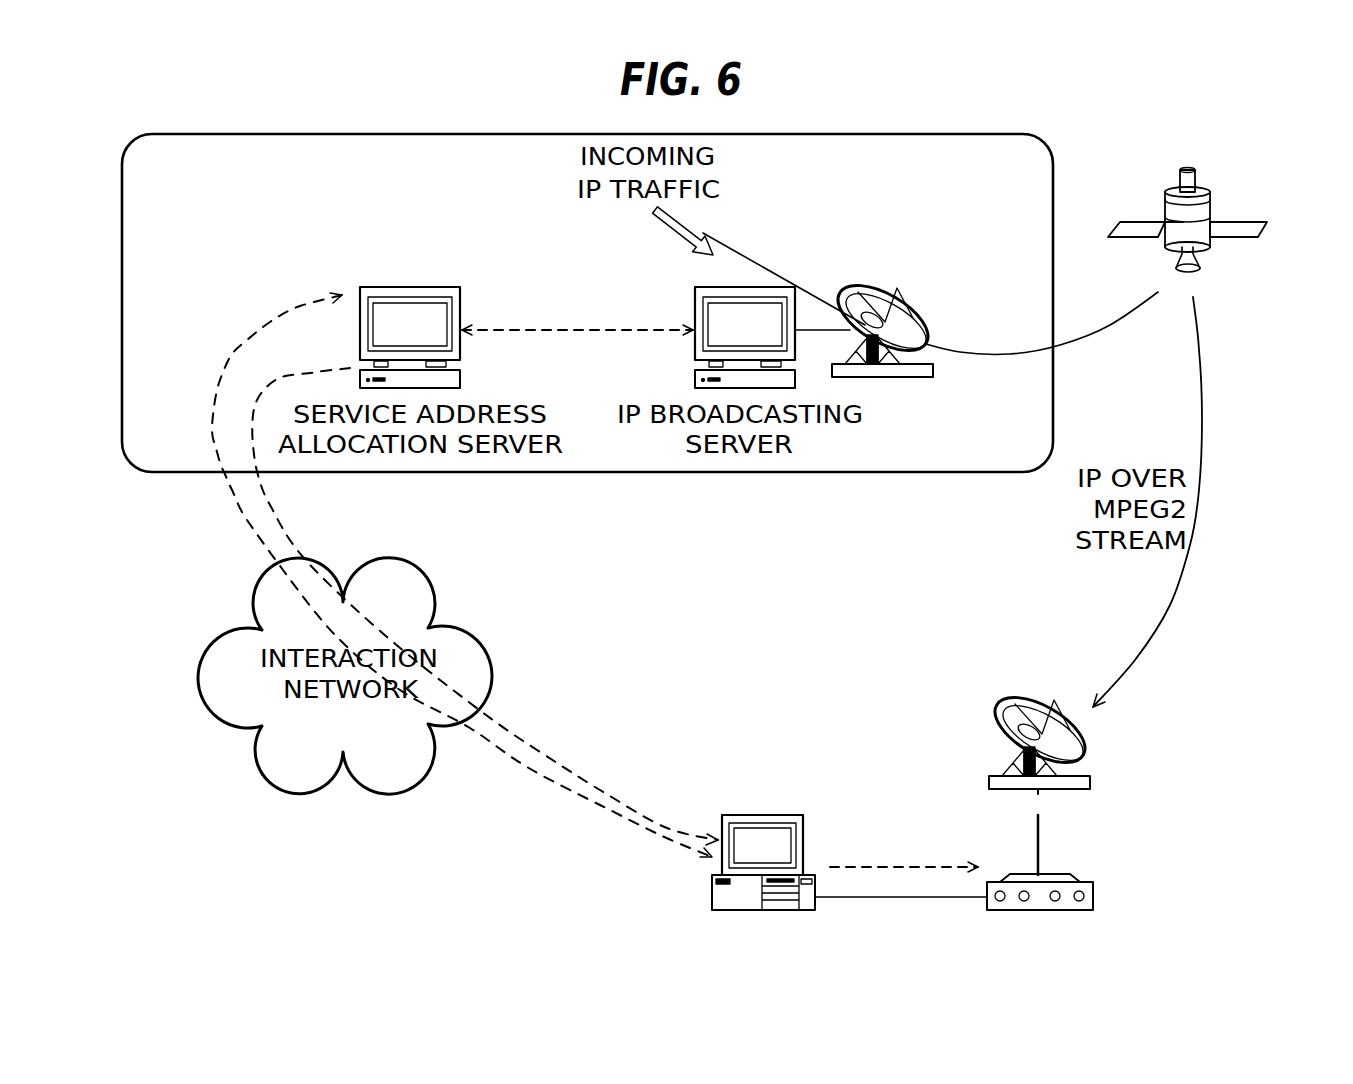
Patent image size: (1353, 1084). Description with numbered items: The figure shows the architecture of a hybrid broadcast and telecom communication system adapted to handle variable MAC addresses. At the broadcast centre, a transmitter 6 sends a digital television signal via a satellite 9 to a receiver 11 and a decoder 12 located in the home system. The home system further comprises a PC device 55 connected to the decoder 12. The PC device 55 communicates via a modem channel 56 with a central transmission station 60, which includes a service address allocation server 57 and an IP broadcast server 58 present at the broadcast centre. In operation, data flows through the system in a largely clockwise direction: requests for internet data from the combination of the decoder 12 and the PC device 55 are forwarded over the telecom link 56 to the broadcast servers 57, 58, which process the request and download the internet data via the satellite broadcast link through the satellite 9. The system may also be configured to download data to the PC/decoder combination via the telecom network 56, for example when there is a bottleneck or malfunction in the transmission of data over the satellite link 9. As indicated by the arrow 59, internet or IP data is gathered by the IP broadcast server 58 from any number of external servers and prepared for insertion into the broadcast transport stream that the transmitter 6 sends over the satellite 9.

The central transmission station 60 is at (975, 134).
The service address allocation server 57 is at (388, 287).
The IP broadcast server 58 is at (697, 295).
The arrow indicating incoming IP data 59 is at (737, 256).
The transmitter 6 is at (907, 377).
The satellite 9 is at (1203, 190).
The receiver 11 is at (1093, 757).
The decoder 12 is at (1093, 898).
The PC device 55 is at (712, 910).
The modem channel 56 is at (555, 762).